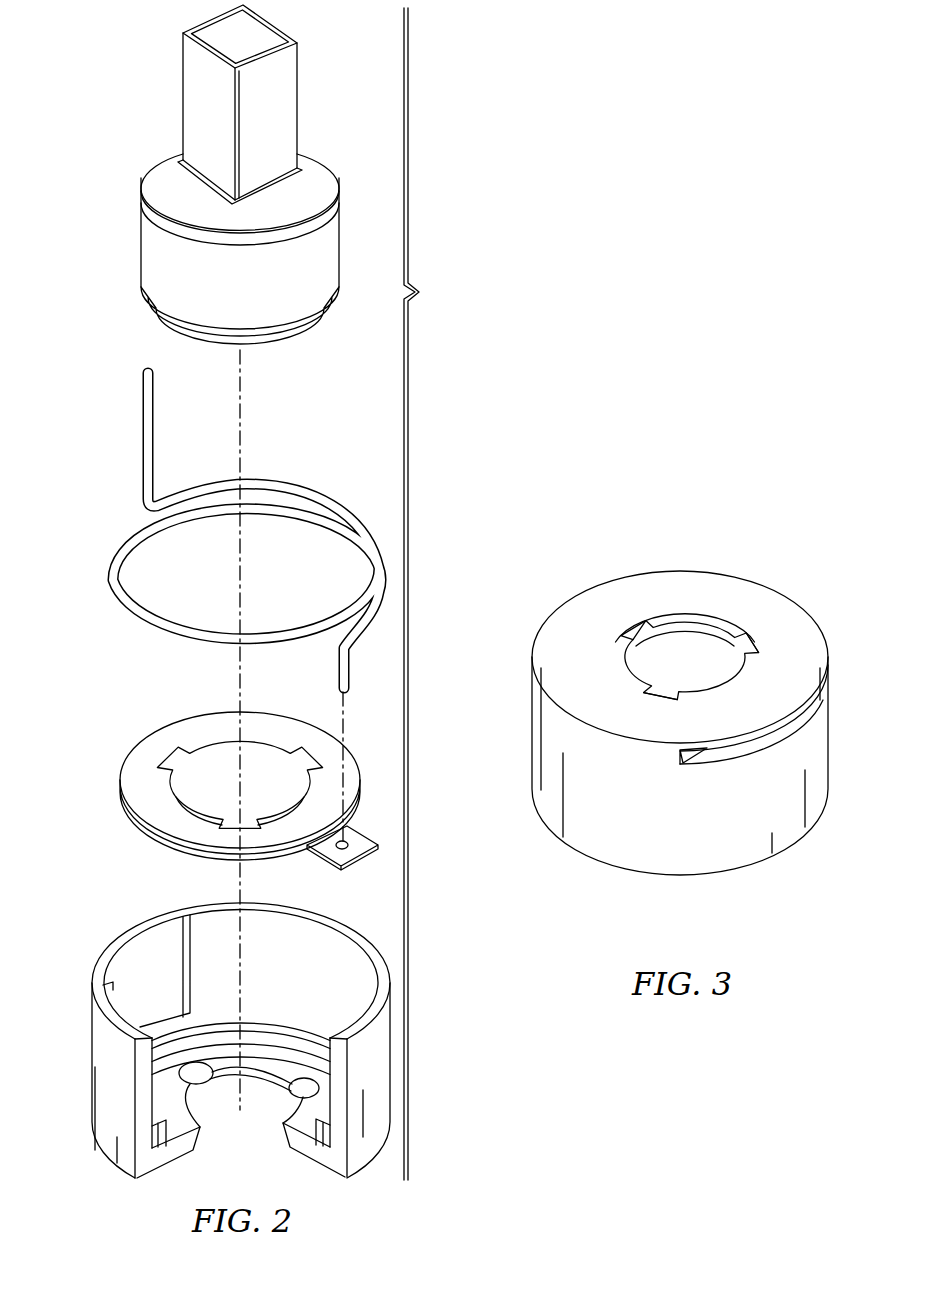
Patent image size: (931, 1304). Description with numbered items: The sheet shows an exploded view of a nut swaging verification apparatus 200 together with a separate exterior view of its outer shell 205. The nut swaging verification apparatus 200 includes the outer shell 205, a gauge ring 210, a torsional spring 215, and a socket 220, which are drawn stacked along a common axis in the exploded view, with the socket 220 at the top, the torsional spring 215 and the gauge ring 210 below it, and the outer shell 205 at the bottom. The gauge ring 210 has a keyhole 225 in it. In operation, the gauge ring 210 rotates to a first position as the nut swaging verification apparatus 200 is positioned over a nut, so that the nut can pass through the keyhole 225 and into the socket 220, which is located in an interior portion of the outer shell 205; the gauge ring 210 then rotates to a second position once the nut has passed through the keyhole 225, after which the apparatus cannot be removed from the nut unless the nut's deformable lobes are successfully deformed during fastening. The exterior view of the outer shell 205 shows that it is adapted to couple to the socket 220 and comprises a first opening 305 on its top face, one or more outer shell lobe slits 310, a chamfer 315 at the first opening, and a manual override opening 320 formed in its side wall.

In FIG. 2, the nut swaging verification apparatus 200 is at (461, 594).
In FIG. 2, the outer shell 205 is at (92, 1058).
In FIG. 3, the outer shell 205 is at (528, 615).
In FIG. 2, the gauge ring 210 is at (122, 784).
In FIG. 2, the torsional spring 215 is at (118, 560).
In FIG. 2, the socket 220 is at (140, 228).
In FIG. 2, the keyhole 225 is at (210, 770).
In FIG. 3, the first opening 305 is at (688, 650).
In FIG. 3, the outer shell lobe slits 310 is at (667, 697).
In FIG. 3, the chamfer 315 is at (720, 620).
In FIG. 3, the manual override opening 320 is at (737, 750).